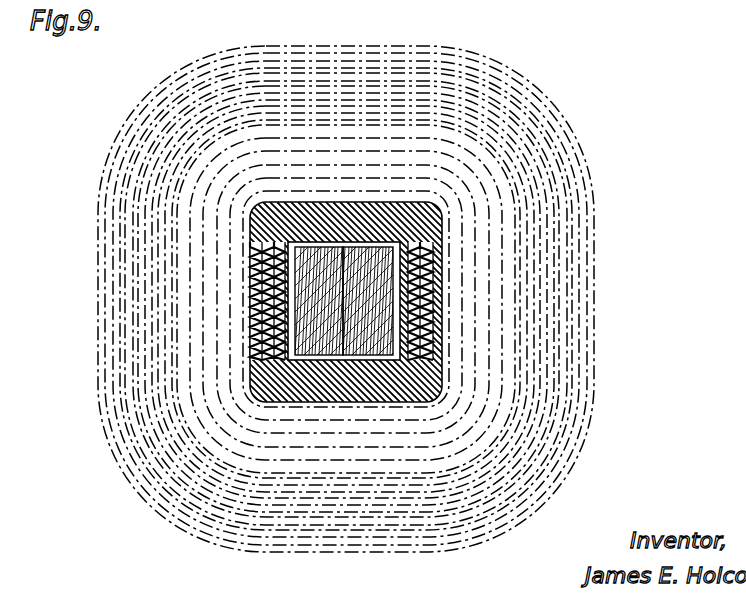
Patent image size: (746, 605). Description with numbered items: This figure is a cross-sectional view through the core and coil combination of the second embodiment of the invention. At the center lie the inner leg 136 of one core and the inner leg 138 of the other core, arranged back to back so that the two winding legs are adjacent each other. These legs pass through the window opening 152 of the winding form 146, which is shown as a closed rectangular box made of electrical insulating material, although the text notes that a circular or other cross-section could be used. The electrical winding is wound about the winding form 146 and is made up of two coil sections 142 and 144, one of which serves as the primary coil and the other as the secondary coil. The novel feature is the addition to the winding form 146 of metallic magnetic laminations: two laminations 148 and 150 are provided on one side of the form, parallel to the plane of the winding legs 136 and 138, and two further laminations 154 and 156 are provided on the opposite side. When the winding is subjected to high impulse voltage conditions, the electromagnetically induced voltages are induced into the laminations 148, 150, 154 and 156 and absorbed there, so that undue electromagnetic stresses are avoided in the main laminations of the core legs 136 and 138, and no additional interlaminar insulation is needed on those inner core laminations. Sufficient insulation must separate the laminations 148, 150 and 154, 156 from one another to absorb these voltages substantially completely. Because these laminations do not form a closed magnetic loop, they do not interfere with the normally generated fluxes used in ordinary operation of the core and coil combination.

The inner leg 136 is at (320, 252).
The inner leg 138 is at (360, 250).
The coil section 142 is at (337, 425).
The coil section 144 is at (145, 423).
The winding form 146 is at (382, 212).
The metallic magnetic lamination 148 is at (263, 220).
The metallic magnetic lamination 150 is at (273, 207).
The window opening 152 is at (393, 243).
The metallic magnetic lamination 154 is at (433, 380).
The metallic magnetic lamination 156 is at (433, 362).